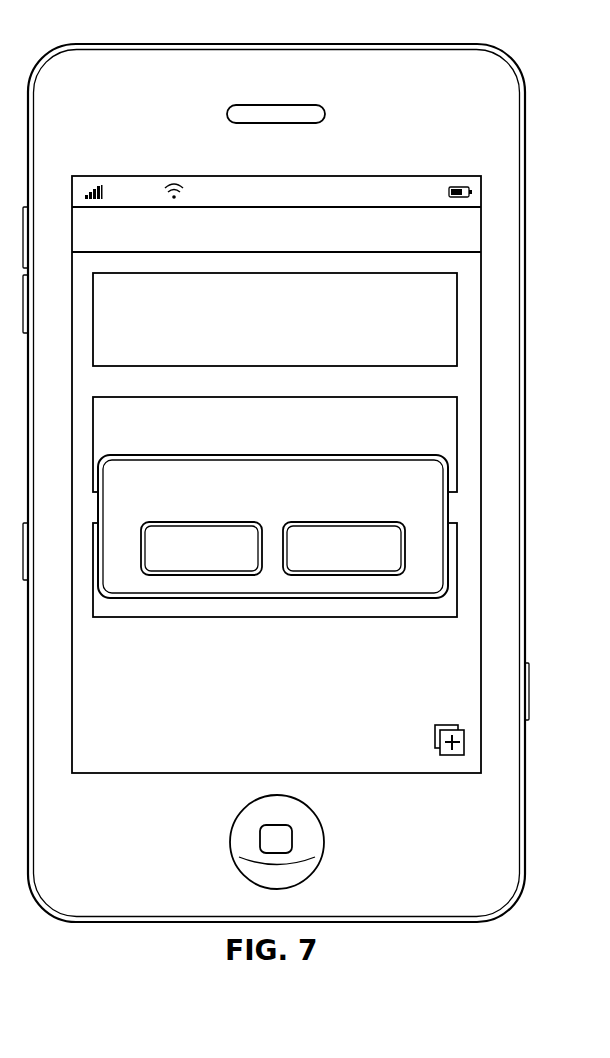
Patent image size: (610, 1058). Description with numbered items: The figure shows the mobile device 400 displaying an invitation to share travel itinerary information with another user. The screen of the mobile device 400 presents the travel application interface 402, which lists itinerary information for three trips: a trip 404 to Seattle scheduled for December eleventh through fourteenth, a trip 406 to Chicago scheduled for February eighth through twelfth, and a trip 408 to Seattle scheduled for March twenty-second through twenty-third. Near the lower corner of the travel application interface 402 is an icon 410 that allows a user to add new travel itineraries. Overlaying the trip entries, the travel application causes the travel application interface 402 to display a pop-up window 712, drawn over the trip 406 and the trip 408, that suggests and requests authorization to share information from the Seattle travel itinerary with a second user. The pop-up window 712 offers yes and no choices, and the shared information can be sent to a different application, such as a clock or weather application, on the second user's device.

The mobile device 400 is at (523, 117).
The travel application interface 402 is at (481, 235).
The trip to Seattle 404 is at (457, 325).
The trip to Chicago 406 is at (457, 453).
The trip to Seattle 408 is at (457, 575).
The icon 410 is at (464, 742).
The pop-up window 712 is at (447, 507).